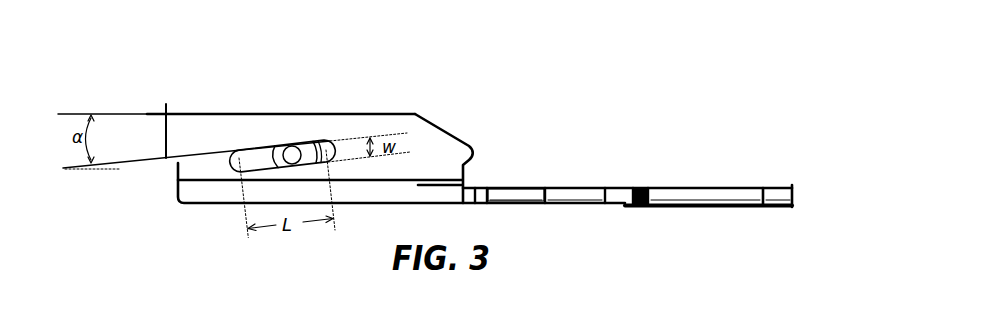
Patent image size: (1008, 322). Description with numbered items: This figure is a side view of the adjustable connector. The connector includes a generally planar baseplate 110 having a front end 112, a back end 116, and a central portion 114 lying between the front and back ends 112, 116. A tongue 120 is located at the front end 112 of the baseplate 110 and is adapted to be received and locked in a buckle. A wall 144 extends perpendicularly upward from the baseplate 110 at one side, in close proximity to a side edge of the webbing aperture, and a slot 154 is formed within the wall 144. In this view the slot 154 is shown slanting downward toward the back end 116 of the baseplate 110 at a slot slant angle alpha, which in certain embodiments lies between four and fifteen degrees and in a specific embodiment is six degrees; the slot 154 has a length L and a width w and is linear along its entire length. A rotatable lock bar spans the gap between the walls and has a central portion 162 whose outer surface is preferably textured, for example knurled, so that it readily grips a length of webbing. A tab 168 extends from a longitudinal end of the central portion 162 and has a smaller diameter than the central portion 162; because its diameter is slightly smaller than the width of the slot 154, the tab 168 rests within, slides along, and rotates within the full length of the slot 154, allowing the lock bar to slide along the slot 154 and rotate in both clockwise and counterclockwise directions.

The baseplate 110 is at (674, 126).
The front end 112 is at (793, 197).
The central portion 114 is at (525, 188).
The back end 116 is at (178, 181).
The tongue 120 is at (757, 187).
The wall 144 is at (426, 113).
The slot 154 is at (316, 143).
The central portion 162 is at (277, 149).
The tab 168 is at (293, 145).